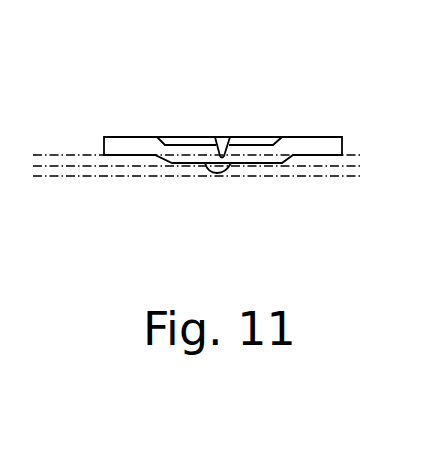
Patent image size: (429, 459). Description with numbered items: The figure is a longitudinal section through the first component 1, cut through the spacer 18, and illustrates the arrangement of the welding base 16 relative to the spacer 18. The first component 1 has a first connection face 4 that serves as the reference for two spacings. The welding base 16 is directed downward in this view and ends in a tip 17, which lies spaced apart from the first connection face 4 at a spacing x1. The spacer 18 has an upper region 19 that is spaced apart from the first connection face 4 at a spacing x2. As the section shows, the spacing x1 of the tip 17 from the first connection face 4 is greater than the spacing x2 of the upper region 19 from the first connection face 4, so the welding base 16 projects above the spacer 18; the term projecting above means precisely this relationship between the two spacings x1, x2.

The first component 1 is at (313, 145).
The first connection face 4 is at (315, 172).
The welding base 16 is at (209, 178).
The tip 17 is at (222, 173).
The spacer 18 is at (258, 163).
The upper region 19 is at (178, 163).
The spacing x1 is at (44, 196).
The spacing x2 is at (72, 134).